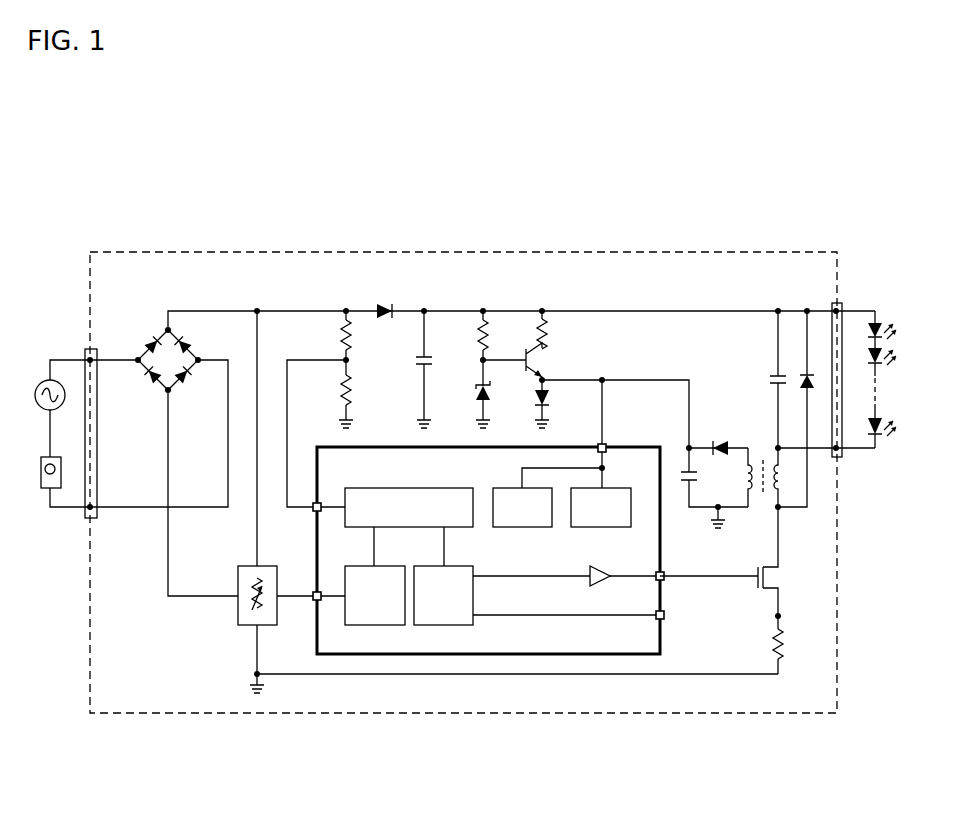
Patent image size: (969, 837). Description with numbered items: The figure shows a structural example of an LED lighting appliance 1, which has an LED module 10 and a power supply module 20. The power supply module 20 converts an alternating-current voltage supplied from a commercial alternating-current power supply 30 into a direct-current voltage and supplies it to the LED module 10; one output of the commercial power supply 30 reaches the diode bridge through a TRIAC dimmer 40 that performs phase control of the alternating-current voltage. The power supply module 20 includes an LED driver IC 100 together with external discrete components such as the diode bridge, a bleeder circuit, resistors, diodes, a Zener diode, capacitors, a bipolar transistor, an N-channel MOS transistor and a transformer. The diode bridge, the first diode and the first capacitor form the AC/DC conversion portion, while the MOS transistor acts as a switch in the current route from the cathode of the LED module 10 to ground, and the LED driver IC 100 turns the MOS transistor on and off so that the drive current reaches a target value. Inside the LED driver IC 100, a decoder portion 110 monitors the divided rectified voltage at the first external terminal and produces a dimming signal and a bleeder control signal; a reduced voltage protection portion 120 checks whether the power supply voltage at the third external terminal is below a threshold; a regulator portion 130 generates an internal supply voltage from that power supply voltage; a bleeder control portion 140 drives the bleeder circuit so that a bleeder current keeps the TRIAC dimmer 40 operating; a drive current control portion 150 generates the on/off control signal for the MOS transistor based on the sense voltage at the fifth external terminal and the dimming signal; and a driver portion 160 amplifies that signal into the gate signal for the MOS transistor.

The LED lighting appliance 1 is at (75, 222).
The LED module 10 is at (870, 460).
The power supply module 20 is at (463, 252).
The commercial a.c. power supply 30 is at (40, 414).
The TRIAC dimmer 40 is at (40, 504).
The LED driver IC 100 is at (390, 448).
The decoder portion 110 is at (412, 488).
The reduced voltage protection portion 120 is at (506, 488).
The regulator portion 130 is at (628, 488).
The bleeder control portion 140 is at (397, 566).
The drive current control portion 150 is at (467, 566).
The driver portion 160 is at (603, 570).